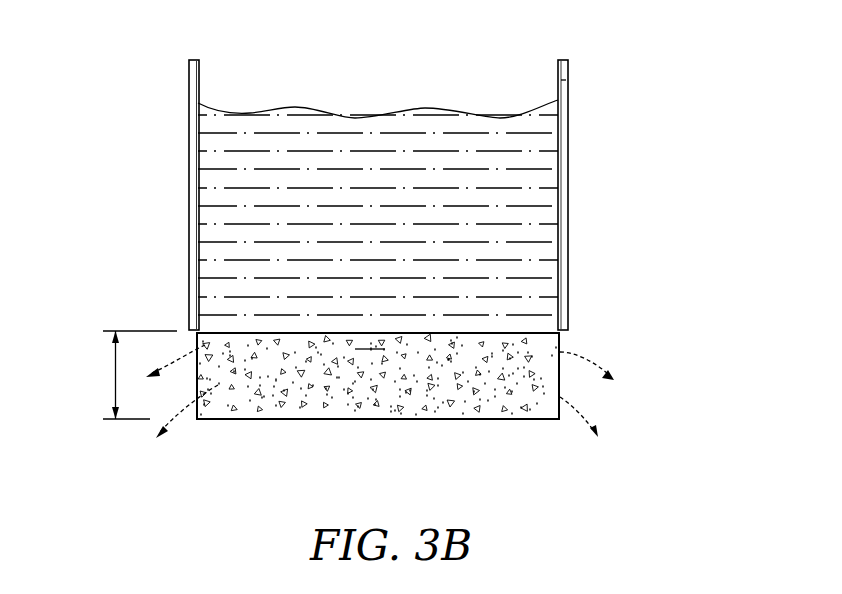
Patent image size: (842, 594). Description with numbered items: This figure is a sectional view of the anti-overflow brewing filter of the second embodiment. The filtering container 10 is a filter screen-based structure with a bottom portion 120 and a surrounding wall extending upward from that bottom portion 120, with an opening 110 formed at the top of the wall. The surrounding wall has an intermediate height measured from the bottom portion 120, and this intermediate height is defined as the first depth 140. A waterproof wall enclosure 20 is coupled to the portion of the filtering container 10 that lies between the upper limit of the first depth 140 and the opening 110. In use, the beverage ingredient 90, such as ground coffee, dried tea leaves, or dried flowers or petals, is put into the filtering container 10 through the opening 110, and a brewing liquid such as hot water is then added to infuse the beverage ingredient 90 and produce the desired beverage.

The filtering container 10 is at (558, 65).
The waterproof wall enclosure 20 is at (563, 80).
The beverage ingredient 90 is at (560, 372).
The opening 110 is at (331, 70).
The bottom portion 120 is at (518, 421).
The first depth 140 is at (115, 375).